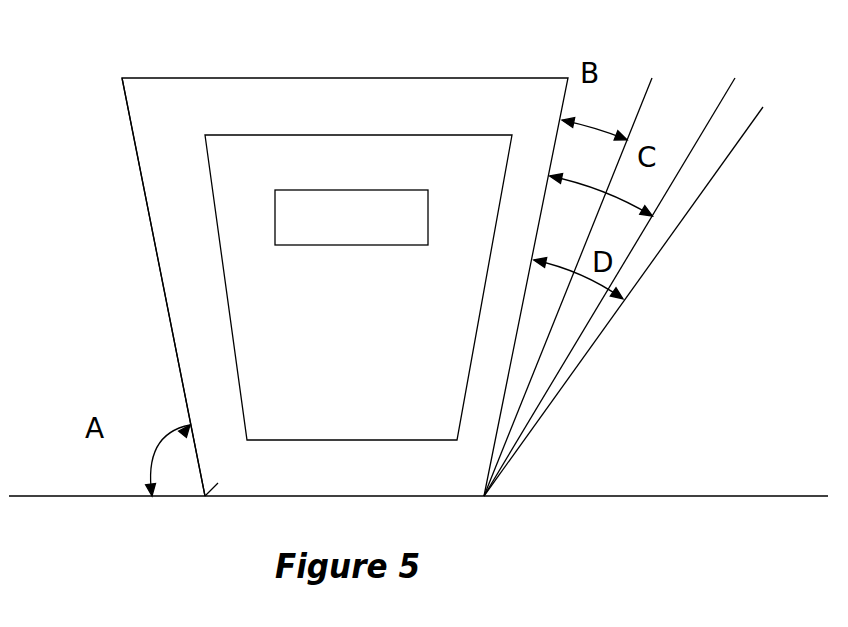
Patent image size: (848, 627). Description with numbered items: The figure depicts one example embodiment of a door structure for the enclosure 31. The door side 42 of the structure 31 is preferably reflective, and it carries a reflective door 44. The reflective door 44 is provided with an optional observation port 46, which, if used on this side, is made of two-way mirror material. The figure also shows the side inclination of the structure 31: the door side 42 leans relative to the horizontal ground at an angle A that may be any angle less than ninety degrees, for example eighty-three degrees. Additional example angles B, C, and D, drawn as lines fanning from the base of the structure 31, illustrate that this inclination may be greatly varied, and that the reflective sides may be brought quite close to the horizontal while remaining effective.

The enclosure 31 is at (421, 55).
The door side 42 is at (187, 280).
The reflective door 44 is at (370, 390).
The observation port 46 is at (323, 229).